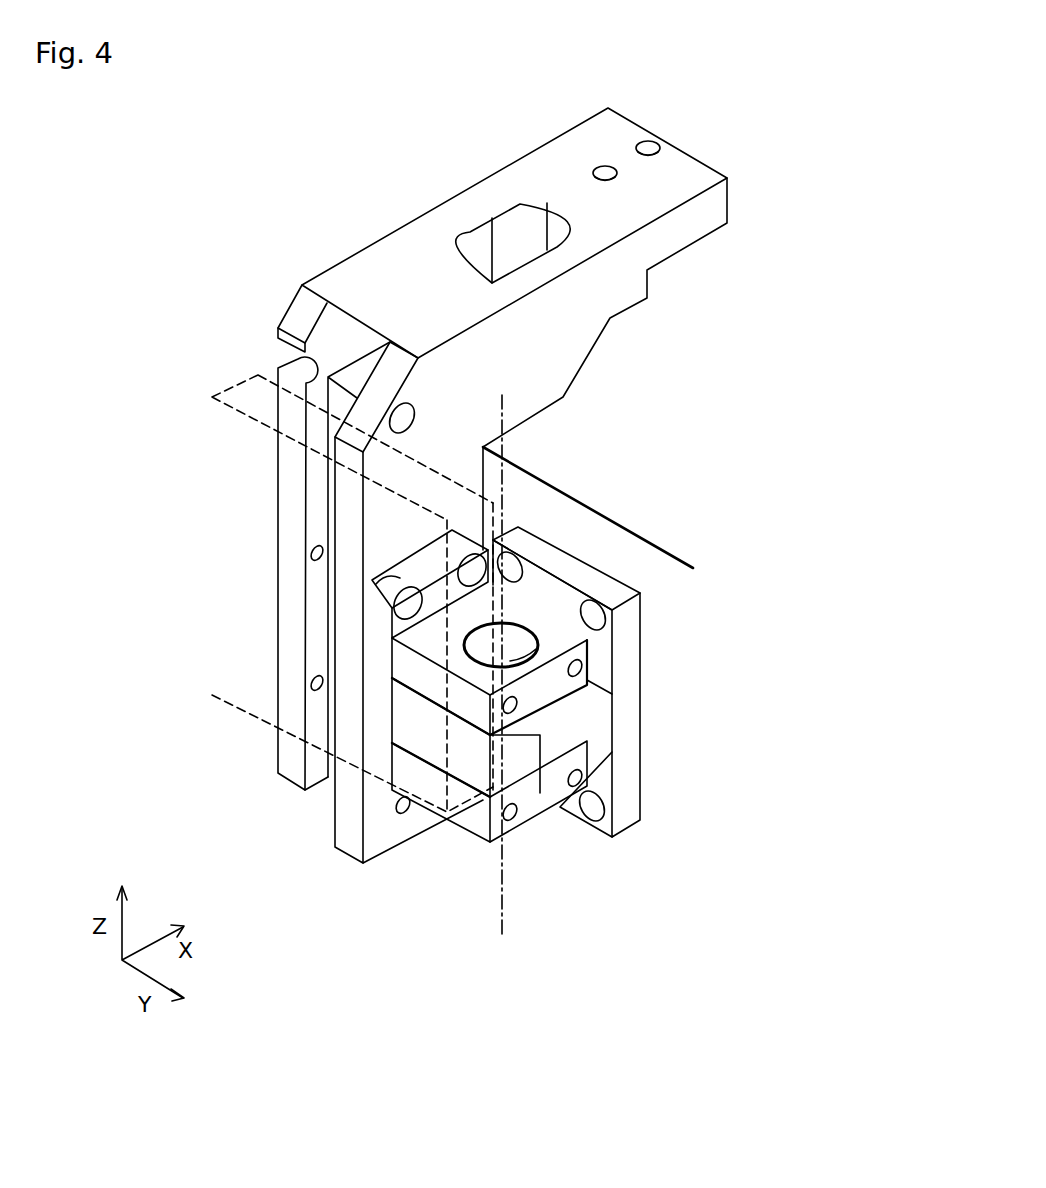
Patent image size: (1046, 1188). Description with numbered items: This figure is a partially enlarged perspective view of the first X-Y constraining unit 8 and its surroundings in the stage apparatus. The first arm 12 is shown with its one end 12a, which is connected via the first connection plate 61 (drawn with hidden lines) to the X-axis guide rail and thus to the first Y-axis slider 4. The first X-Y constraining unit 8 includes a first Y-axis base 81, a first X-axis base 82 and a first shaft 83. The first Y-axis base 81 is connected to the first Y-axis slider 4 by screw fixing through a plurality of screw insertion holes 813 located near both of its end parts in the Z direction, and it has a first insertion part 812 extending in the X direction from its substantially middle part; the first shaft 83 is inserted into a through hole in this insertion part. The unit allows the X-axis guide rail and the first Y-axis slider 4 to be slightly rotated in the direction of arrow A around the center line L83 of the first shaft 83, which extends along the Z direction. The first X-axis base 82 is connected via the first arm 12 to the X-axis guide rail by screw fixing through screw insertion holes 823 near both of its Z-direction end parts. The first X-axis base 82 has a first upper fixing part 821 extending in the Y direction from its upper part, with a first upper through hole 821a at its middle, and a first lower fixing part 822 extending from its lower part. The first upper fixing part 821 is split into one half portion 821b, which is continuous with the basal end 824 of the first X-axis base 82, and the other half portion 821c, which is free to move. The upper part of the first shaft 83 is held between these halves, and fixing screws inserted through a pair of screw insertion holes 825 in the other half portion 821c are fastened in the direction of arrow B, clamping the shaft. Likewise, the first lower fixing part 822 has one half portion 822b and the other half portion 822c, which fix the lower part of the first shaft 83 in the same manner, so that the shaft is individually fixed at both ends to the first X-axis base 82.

The first Y-axis slider 4 is at (633, 563).
The first X-Y constraining unit 8 is at (470, 667).
The first arm 12 is at (502, 530).
The one end of the first arm 12a is at (381, 855).
The first connection plate 61 is at (257, 397).
The first Y-axis base 81 is at (652, 673).
The first insertion part 812 is at (433, 738).
The screw insertion holes 813 is at (512, 560).
The first X-axis base 82 is at (450, 649).
The first upper fixing part 821 is at (436, 707).
The first upper through hole 821a is at (540, 645).
The one half portion 821b is at (465, 676).
The other half portion 821c is at (417, 677).
The first lower fixing part 822 is at (362, 807).
The one half portion 822b is at (400, 797).
The other half portion 822c is at (470, 822).
The screw insertion holes 823 is at (365, 584).
The basal end 824 is at (372, 651).
The screw insertion holes 825 is at (518, 704).
The first shaft 83 is at (517, 626).
The center line of the first shaft L83 is at (509, 652).
The direction of arrow A is at (575, 942).
The direction of arrow B is at (480, 673).